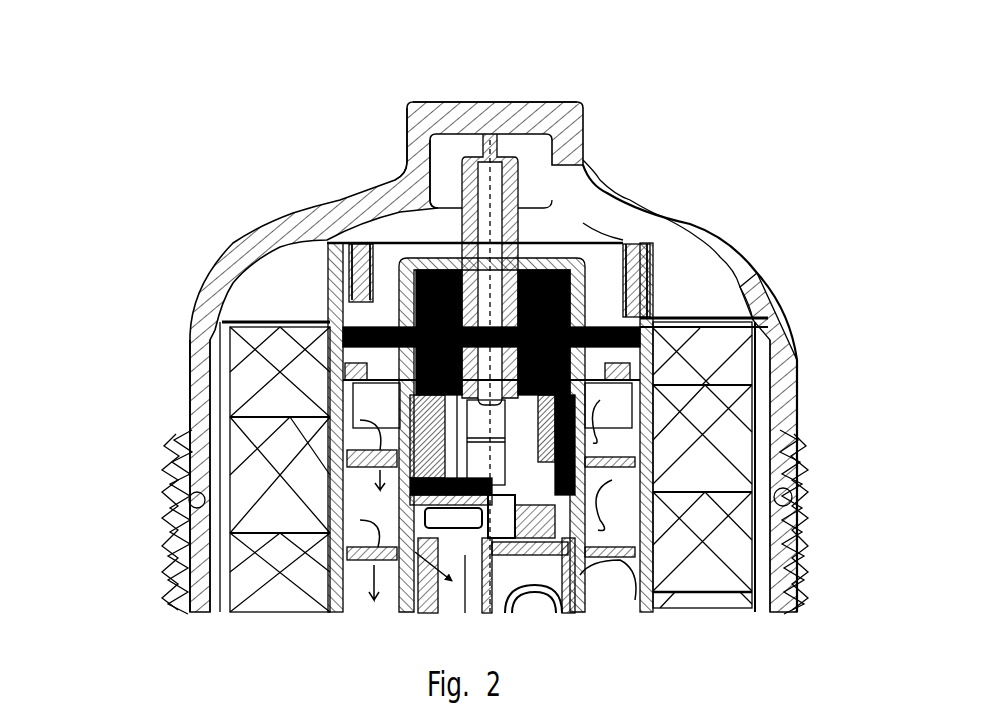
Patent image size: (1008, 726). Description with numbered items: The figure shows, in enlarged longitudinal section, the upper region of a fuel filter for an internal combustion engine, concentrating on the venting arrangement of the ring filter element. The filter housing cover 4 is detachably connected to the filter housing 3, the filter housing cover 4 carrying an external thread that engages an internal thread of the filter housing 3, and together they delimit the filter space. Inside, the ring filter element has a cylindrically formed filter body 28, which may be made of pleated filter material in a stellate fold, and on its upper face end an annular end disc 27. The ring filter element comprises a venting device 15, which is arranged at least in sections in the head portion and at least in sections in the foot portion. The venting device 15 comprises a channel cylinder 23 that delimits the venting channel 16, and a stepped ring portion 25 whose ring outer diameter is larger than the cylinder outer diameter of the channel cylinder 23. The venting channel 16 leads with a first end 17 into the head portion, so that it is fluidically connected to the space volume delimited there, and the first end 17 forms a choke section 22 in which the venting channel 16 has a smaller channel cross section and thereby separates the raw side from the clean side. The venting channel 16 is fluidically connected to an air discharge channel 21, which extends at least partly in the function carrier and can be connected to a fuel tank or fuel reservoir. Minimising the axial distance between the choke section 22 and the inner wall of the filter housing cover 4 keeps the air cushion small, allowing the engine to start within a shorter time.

The filter housing 3 is at (166, 552).
The filter housing cover 4 is at (226, 251).
The venting device 15 is at (433, 189).
The venting channel 16 is at (405, 192).
The first end 17 is at (476, 143).
The air discharge channel 21 is at (187, 407).
The choke section 22 is at (501, 151).
The channel cylinder 23 is at (522, 190).
The stepped ring portion 25 is at (590, 266).
The annular end disc 27 is at (705, 311).
The filter body 28 is at (705, 368).